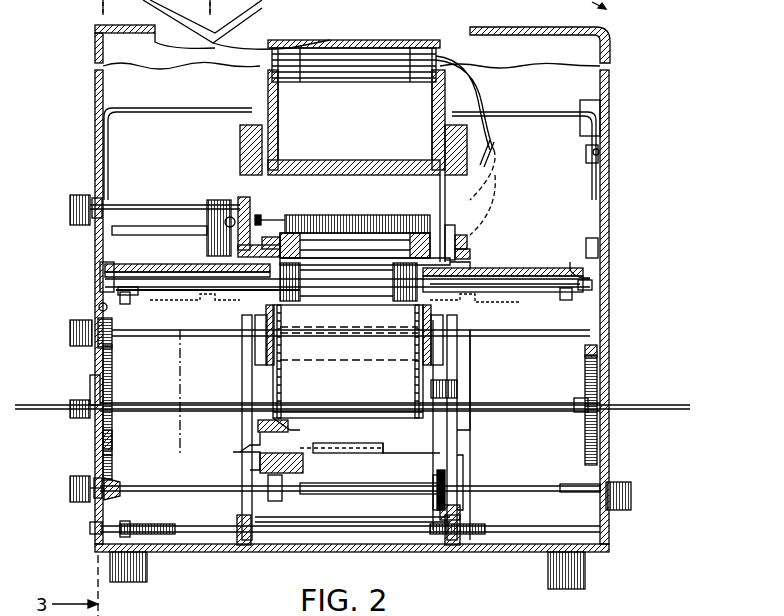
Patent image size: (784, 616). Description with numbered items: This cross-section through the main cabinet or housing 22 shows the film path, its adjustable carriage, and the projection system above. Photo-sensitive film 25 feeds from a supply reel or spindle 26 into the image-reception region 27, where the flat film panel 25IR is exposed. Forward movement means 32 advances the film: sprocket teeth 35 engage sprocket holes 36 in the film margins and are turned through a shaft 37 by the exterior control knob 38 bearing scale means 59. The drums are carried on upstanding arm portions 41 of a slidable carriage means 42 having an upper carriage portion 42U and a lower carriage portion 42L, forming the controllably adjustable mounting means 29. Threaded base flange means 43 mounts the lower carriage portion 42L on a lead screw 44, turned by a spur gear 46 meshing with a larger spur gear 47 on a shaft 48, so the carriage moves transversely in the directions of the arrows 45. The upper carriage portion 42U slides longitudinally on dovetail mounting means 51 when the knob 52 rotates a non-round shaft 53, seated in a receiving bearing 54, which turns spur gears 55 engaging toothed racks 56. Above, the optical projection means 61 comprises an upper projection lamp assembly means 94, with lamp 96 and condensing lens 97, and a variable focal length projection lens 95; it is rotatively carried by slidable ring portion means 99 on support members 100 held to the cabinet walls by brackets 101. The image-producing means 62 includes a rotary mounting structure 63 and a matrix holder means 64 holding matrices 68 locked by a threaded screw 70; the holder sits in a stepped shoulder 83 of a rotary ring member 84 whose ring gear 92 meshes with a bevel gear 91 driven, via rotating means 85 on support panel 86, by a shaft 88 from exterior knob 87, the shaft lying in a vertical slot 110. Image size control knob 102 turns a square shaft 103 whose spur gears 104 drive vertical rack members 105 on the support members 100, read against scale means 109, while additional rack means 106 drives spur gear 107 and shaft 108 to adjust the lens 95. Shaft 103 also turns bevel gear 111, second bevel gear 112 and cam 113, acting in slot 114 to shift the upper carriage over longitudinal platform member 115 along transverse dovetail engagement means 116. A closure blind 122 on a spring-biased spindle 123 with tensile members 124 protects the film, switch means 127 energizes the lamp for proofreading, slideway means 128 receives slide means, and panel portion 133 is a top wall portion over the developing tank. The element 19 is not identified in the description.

The main cabinet or housing 22 is at (93, 85).
The lamp 96 is at (372, 70).
The condensing lens 97 is at (355, 166).
The support members 100 is at (125, 108).
The slidable ring portion means 99 is at (240, 135).
The switch means 127 is at (608, 114).
The brackets 101 is at (600, 157).
The exterior knob 87 is at (72, 196).
The vertical slot 110 is at (92, 200).
The rotating means 85 is at (226, 219).
The shaft 88 is at (138, 230).
The horizontal support strip or panel 86 is at (207, 228).
The bevel gear 91 is at (246, 200).
The threaded screw 70 is at (258, 214).
The slideway means 128 is at (125, 287).
The matrices 68 is at (387, 217).
The image-producing means 62 is at (446, 202).
The stepped shoulder 83 is at (450, 232).
The multiple matrix holder means 64 is at (468, 238).
The ring gear 92 is at (462, 248).
The rotary ring member 84 is at (468, 263).
The controllably adjustable rotary mounting structure 63 is at (492, 246).
The optical projection means 61 is at (490, 175).
The upper projection lamp assembly means 94 is at (478, 162).
The spur gear 107 is at (100, 266).
The additional rack means 106 is at (98, 284).
The closure blind means 122 is at (546, 273).
The shaft 108 is at (176, 290).
The tensile members 124 is at (134, 306).
The spring biased mounting spindle 123 is at (596, 286).
The controllably variable focal length projection lens 95 is at (226, 302).
The sprocket teeth 35 is at (288, 304).
The film panel 25IR is at (366, 275).
The image-reception region 27 is at (342, 306).
The photo-sensitive film 25 is at (396, 376).
The sprocket holes 36 is at (274, 338).
The forward movement means 32 is at (268, 320).
The upstanding arm portions 41 is at (242, 357).
The shaft 37 is at (170, 338).
The square shaft 103 is at (182, 400).
The slidable carriage means 42 is at (480, 386).
The upper carriage portion 42U is at (456, 437).
The lower carriage portion 42L is at (460, 502).
The control knob 38 is at (68, 330).
The scale means 59 is at (98, 350).
The indicia or scale means 109 is at (90, 377).
The spur gears 104 is at (112, 380).
The vertical rack members 105 is at (112, 436).
The panel portion 133 is at (40, 404).
The supply reel or spindle 26 is at (225, 402).
The projected image size control knob 102 is at (82, 418).
The second bevel gear 112 is at (278, 410).
The bevel gear 111 is at (290, 430).
The slot 114 is at (320, 446).
The transverse dovetail engagement means 116 is at (380, 446).
The cam 113 is at (250, 440).
The slidable dovetail mounting means 51 is at (235, 460).
The spur gears 55 is at (265, 475).
The longitudinal toothed rack 56 is at (284, 470).
The longitudinal platform member 115 is at (332, 470).
The controllably adjustable mounting means 29 is at (122, 482).
The receiving bearing 54 is at (120, 496).
The larger spur gear 47 is at (112, 462).
The shaft 48 is at (94, 480).
The knob 19 is at (68, 490).
The knob 52 is at (625, 484).
The non-round shaft 53 is at (568, 494).
The arrows 45 is at (244, 518).
The lead screw 44 is at (92, 528).
The spur gear 46 is at (94, 536).
The threaded base flange means 43 is at (246, 548).